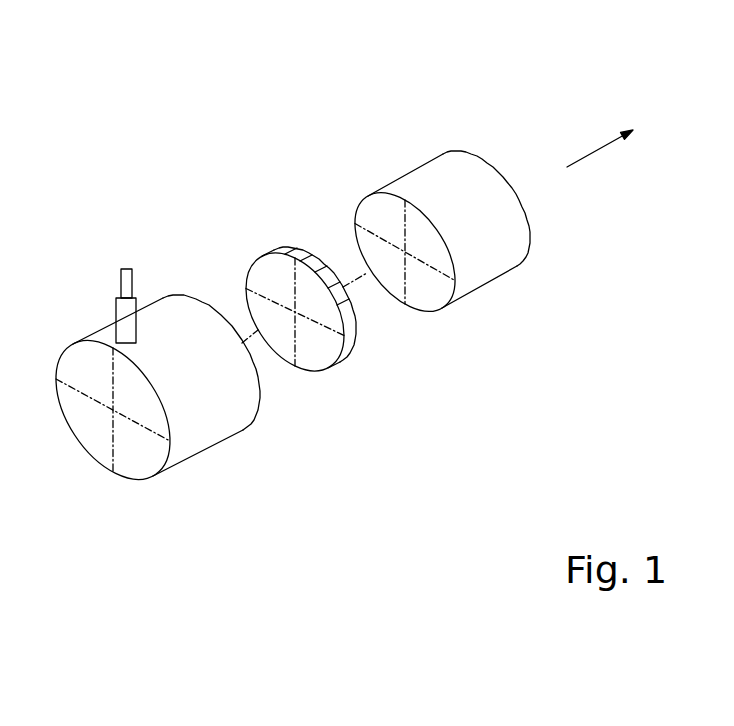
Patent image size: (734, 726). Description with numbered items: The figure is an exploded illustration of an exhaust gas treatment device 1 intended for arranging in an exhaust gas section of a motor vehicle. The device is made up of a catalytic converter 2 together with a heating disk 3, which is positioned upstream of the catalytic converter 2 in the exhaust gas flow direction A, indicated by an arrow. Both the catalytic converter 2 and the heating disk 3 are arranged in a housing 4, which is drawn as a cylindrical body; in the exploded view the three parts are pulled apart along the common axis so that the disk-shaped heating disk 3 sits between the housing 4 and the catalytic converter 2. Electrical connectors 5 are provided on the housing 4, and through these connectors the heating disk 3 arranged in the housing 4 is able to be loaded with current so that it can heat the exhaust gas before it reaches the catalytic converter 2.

The exhaust gas treatment device 1 is at (108, 107).
The catalytic converter 2 is at (427, 187).
The heating disk 3 is at (328, 350).
The housing 4 is at (73, 347).
The electrical connectors 5 is at (131, 290).
The exhaust gas flow direction A is at (600, 136).